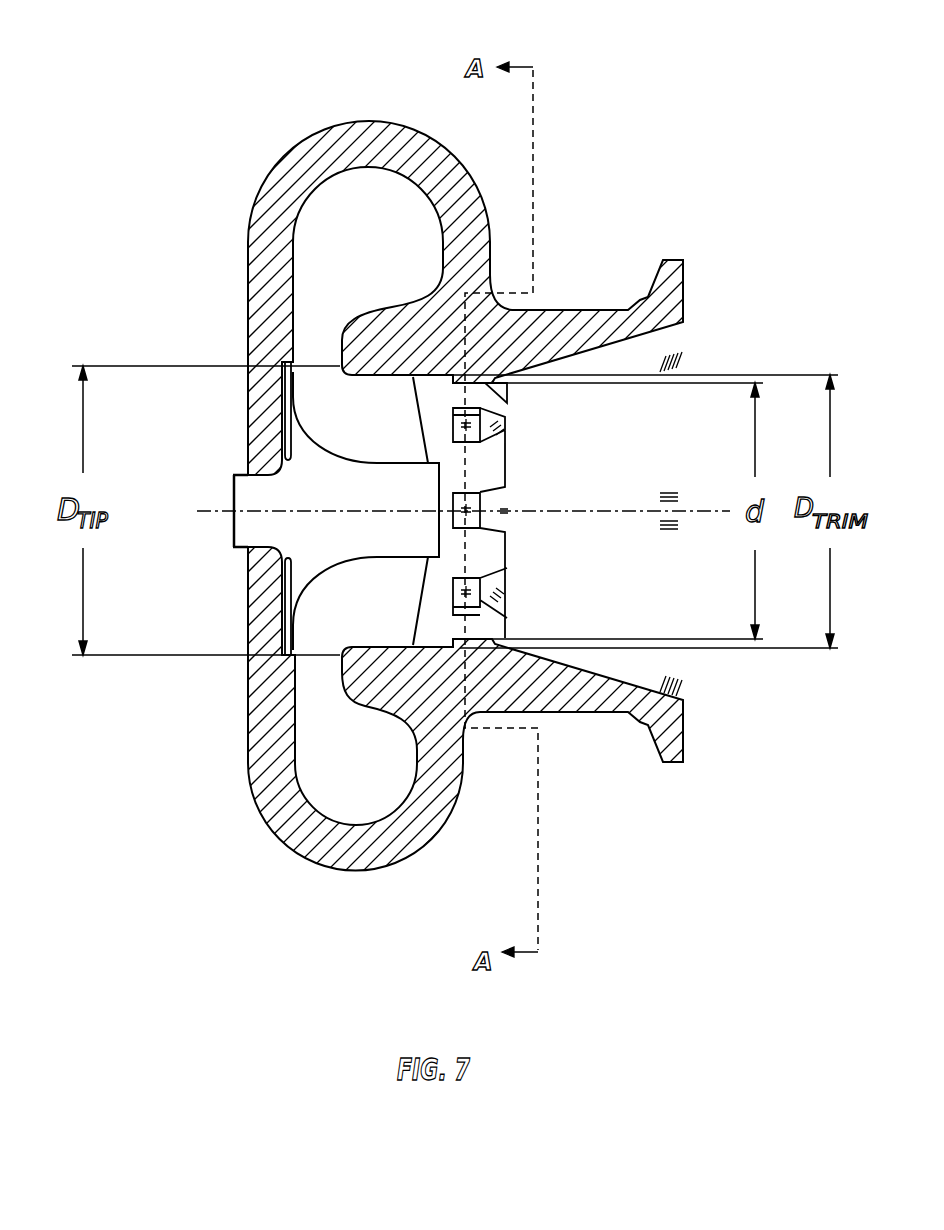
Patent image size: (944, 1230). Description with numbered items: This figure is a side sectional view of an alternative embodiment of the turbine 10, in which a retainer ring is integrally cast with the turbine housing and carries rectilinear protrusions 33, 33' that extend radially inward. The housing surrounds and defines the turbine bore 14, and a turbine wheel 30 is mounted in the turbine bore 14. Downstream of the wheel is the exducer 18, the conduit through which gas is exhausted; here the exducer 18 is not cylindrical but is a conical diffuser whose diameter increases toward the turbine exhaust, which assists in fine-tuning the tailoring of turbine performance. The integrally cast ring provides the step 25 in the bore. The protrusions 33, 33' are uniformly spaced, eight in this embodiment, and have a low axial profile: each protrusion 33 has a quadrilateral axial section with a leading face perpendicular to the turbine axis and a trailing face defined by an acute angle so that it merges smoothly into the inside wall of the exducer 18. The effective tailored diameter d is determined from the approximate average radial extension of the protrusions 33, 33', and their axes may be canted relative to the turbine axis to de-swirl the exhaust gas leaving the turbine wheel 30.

The turbine 10 is at (228, 75).
The turbine bore 14 is at (443, 425).
The exducer 18 is at (678, 672).
The step 25 is at (453, 637).
The turbine wheel 30 is at (309, 398).
The protrusion 33 is at (511, 523).
The protrusion 33' is at (519, 398).